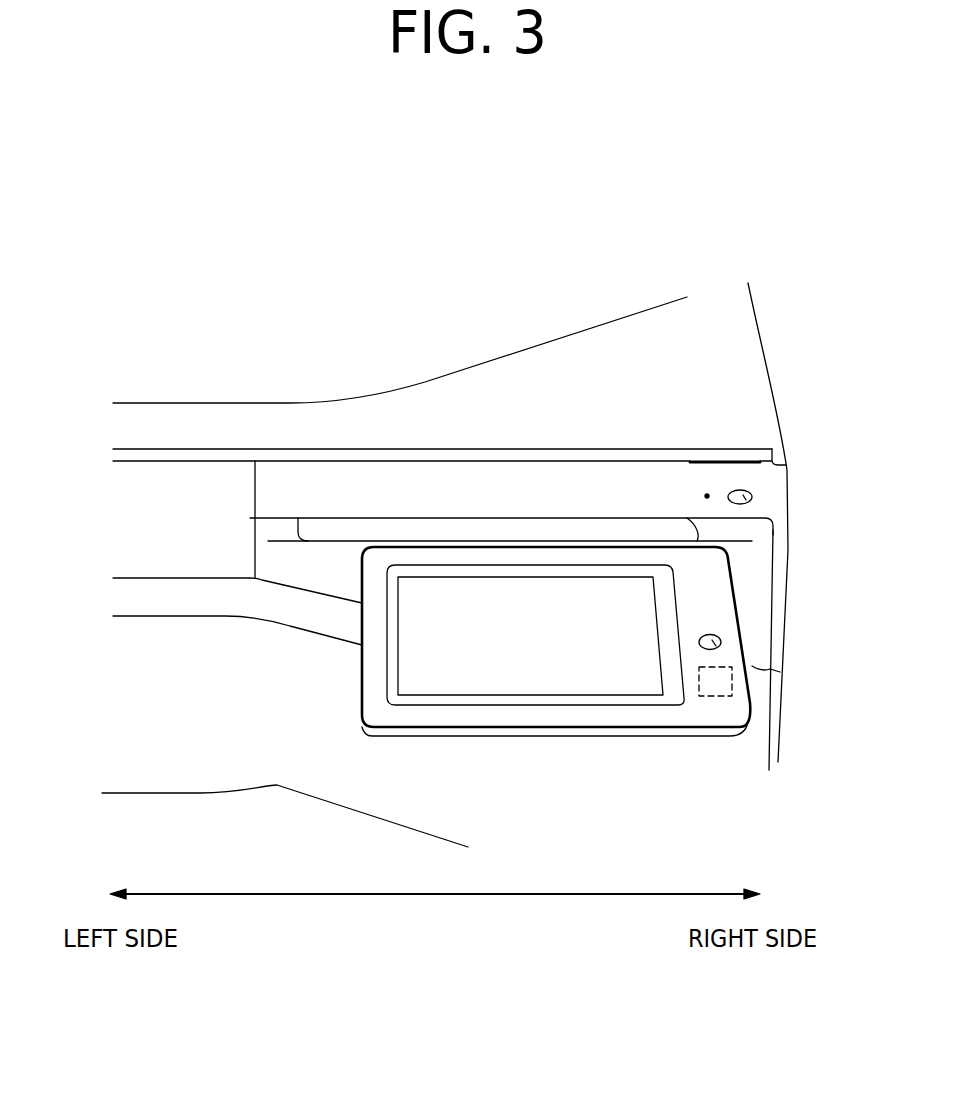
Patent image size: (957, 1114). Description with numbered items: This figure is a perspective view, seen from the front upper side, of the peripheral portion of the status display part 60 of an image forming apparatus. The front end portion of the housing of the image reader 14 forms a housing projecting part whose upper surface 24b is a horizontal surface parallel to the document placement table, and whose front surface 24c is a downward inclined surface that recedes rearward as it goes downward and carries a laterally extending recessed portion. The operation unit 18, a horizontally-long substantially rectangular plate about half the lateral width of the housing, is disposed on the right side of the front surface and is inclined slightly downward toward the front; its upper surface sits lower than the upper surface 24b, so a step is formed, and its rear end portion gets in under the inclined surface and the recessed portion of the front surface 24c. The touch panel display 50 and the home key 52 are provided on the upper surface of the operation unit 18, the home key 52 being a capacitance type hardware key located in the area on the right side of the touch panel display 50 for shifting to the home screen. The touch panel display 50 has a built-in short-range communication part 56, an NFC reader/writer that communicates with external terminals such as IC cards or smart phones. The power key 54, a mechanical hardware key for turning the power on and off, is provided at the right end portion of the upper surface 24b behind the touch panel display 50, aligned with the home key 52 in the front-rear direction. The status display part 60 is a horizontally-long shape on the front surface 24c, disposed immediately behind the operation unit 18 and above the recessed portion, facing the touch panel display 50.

The image reader 14 is at (733, 362).
The operation unit 18 is at (707, 713).
The upper surface 24b is at (300, 480).
The front surface 24c is at (322, 563).
The touch panel display 50 is at (640, 617).
The home key 52 is at (723, 632).
The power key 54 is at (747, 490).
The short-range communication part 56 is at (728, 698).
The status display part 60 is at (552, 527).